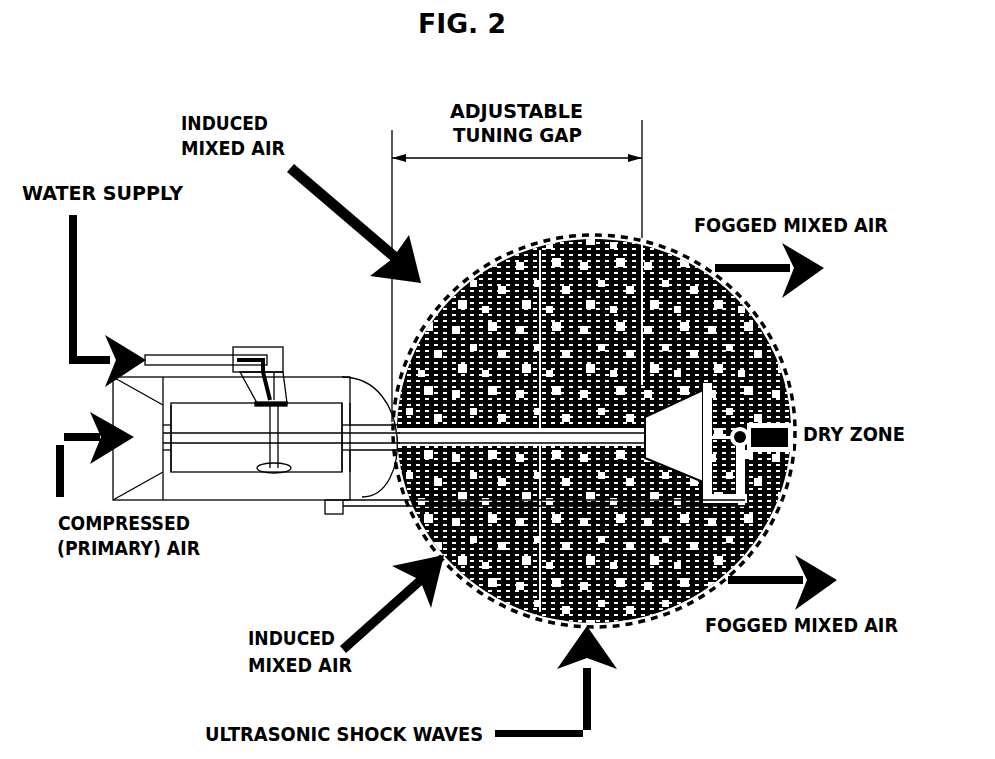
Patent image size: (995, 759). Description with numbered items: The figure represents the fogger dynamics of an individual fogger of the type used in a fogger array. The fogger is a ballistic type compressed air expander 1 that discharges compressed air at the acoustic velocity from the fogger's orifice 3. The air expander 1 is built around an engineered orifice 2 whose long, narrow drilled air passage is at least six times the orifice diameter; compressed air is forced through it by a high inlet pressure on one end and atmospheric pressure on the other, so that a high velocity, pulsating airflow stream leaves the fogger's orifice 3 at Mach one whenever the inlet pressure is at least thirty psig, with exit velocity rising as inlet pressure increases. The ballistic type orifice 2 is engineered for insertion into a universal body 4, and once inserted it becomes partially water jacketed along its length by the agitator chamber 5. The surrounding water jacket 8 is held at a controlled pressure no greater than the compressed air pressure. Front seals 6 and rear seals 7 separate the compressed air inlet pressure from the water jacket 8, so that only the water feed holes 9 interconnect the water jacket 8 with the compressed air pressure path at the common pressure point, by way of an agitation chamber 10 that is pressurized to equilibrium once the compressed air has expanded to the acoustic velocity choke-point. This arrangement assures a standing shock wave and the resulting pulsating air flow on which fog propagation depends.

The air expander 1 is at (308, 374).
The engineered orifice 2 is at (278, 470).
The fogger's orifice 3 is at (356, 424).
The universal body 4 is at (237, 506).
The agitator chamber 5 is at (222, 420).
The front seals 6 is at (347, 470).
The rear seals 7 is at (158, 413).
The water jacket 8 is at (255, 400).
The water feed holes 9 is at (280, 398).
The agitation chamber 10 is at (378, 424).